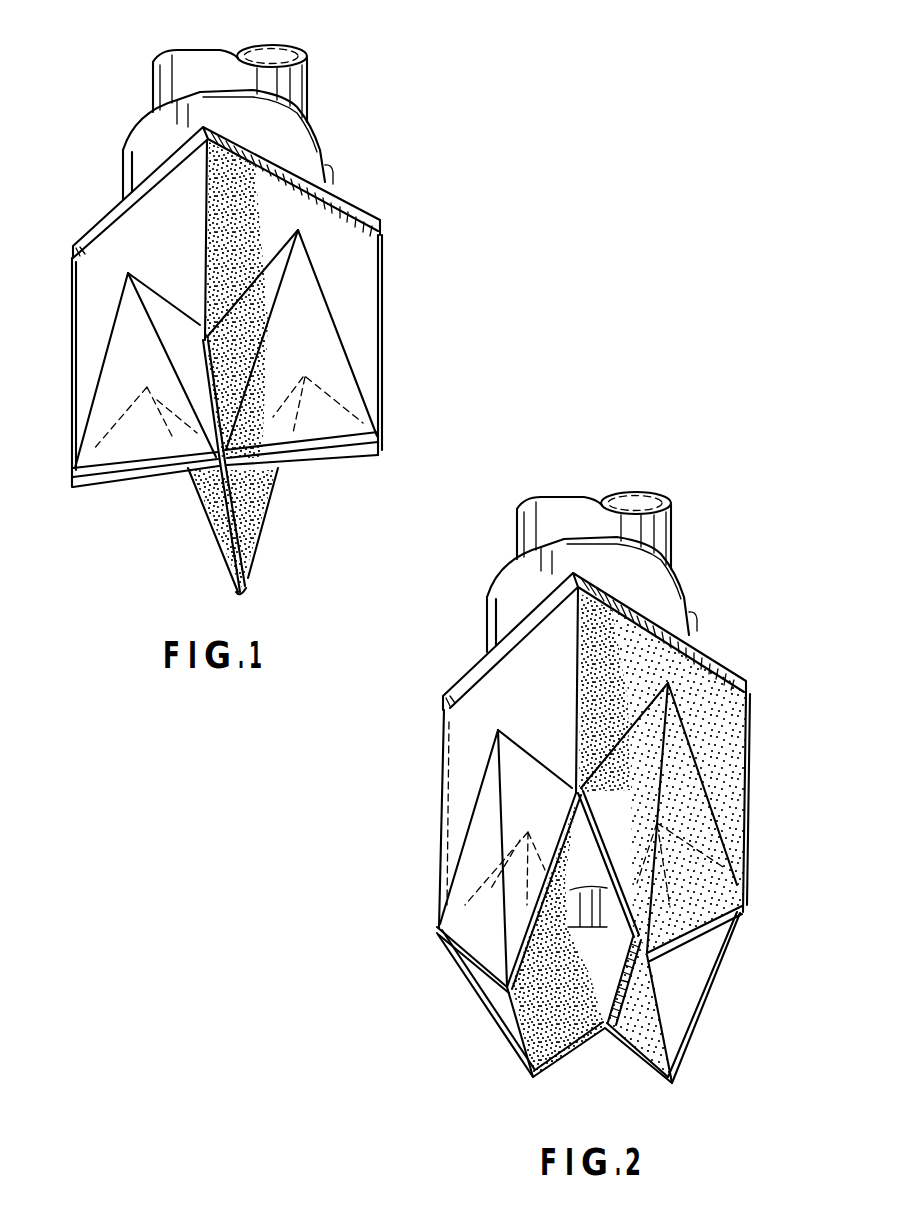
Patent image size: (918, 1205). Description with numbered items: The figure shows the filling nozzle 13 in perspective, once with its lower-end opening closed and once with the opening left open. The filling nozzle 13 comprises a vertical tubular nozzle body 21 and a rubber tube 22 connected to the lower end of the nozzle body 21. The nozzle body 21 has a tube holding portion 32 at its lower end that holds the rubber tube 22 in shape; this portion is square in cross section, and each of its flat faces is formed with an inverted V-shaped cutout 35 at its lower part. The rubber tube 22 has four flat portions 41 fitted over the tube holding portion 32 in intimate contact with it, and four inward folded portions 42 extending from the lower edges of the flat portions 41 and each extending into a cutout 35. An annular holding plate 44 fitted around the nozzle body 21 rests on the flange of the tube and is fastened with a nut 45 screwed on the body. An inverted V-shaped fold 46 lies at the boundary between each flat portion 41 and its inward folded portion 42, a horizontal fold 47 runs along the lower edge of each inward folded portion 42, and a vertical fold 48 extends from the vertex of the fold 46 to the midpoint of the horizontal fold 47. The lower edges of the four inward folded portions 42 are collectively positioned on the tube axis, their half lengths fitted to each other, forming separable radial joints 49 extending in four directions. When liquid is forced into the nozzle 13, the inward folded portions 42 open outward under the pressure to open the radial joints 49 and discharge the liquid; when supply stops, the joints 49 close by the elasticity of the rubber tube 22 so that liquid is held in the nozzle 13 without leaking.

In FIG. 1, the filling nozzle 13 is at (428, 260).
In FIG. 2, the filling nozzle 13 is at (392, 872).
In FIG. 1, the nozzle body 21 is at (313, 86).
In FIG. 2, the nozzle body 21 is at (625, 530).
In FIG. 1, the rubber tube 22 is at (382, 357).
In FIG. 2, the rubber tube 22 is at (436, 879).
In FIG. 2, the tube holding portion 32 is at (590, 991).
In FIG. 2, the inverted V-shaped cutout 35 is at (557, 938).
In FIG. 1, the flat portions 41 is at (115, 235).
In FIG. 2, the flat portions 41 is at (467, 728).
In FIG. 1, the inward folded portions 42 is at (112, 348).
In FIG. 2, the inward folded portions 42 is at (488, 782).
In FIG. 1, the annular holding plate 44 is at (347, 197).
In FIG. 2, the annular holding plate 44 is at (723, 643).
In FIG. 1, the nut 45 is at (310, 131).
In FIG. 2, the nut 45 is at (610, 594).
In FIG. 1, the inverted V-shaped fold 46 is at (110, 323).
In FIG. 2, the inverted V-shaped fold 46 is at (528, 747).
In FIG. 1, the horizontal fold 47 is at (112, 468).
In FIG. 2, the horizontal fold 47 is at (457, 973).
In FIG. 1, the vertical fold 48 is at (167, 358).
In FIG. 2, the vertical fold 48 is at (487, 817).
In FIG. 1, the radial joints 49 is at (162, 472).